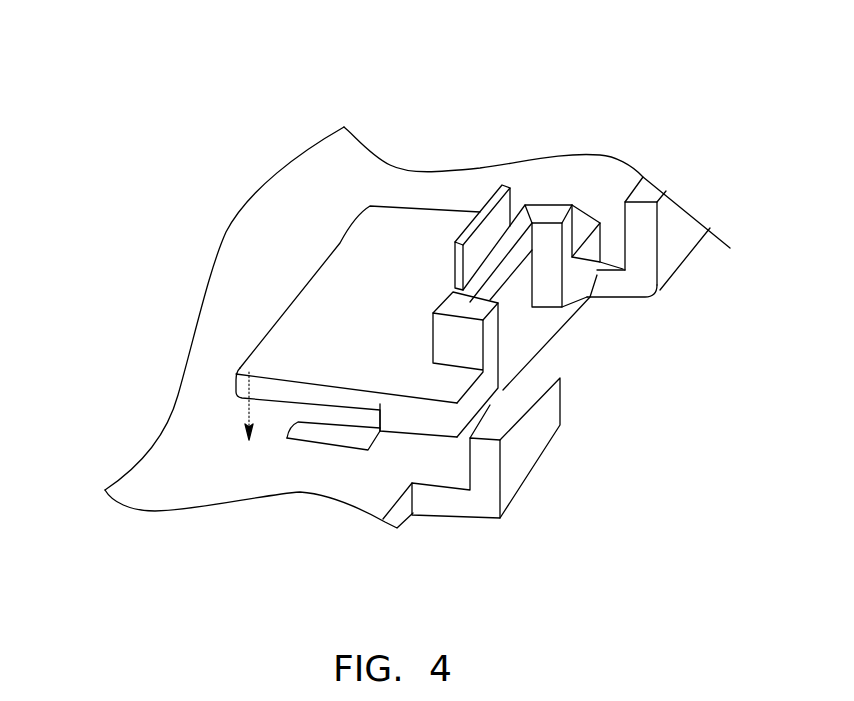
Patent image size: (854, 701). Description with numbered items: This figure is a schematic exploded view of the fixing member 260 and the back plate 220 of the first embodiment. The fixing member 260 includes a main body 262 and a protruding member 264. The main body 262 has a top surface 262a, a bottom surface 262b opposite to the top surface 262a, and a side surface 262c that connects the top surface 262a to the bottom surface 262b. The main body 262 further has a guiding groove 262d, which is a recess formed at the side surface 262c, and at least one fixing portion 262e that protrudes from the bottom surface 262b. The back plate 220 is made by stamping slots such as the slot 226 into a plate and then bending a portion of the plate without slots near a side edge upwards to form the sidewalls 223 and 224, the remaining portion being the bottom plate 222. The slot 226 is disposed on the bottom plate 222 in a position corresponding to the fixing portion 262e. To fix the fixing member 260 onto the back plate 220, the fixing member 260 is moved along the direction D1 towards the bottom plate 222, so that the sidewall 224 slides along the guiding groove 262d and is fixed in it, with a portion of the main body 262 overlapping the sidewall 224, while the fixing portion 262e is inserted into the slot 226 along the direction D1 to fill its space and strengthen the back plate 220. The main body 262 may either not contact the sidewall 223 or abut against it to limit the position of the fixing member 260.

The back plate 220 is at (437, 537).
The bottom plate 222 is at (318, 480).
The sidewall 223 is at (675, 238).
The sidewall 224 is at (535, 445).
The slot 226 is at (595, 330).
The fixing member 260 is at (571, 92).
The main body 262 is at (552, 218).
The top surface 262a is at (360, 350).
The bottom surface 262b is at (298, 452).
The side surface 262c is at (590, 300).
The guiding groove 262d is at (502, 287).
The fixing portion 262e is at (392, 423).
The protruding member 264 is at (490, 200).
The direction D1 is at (245, 415).